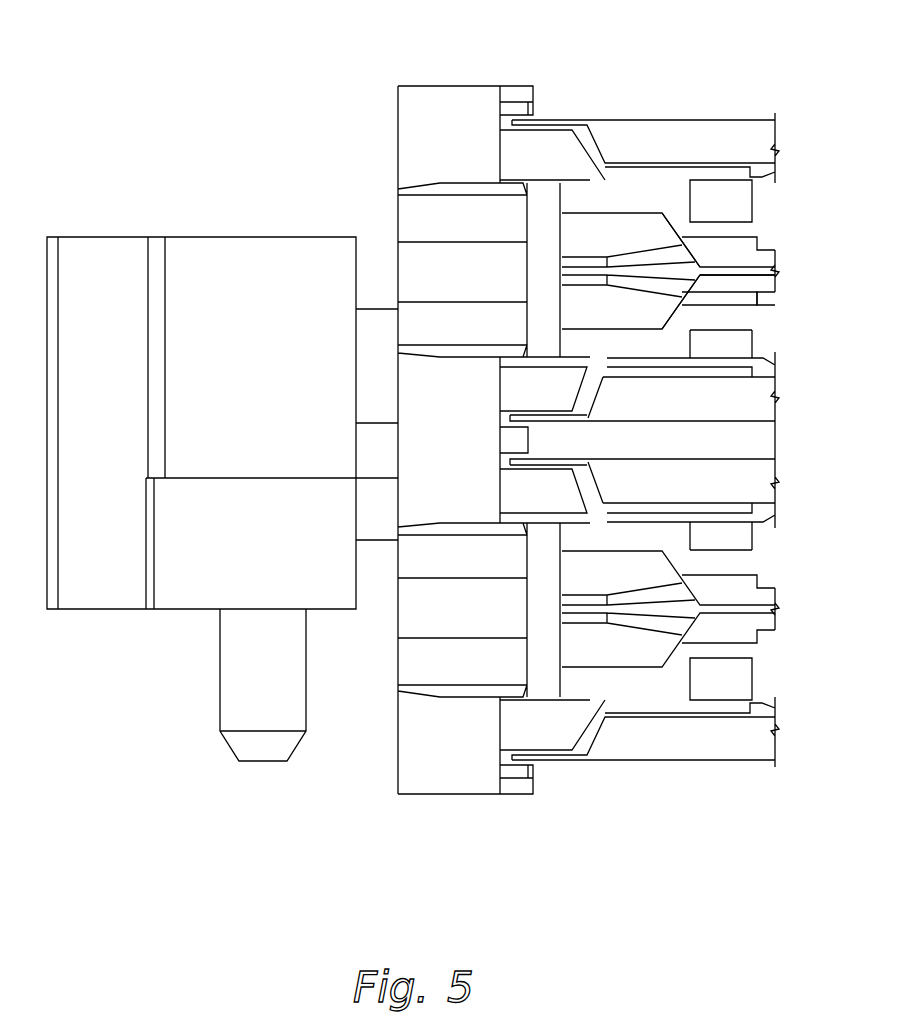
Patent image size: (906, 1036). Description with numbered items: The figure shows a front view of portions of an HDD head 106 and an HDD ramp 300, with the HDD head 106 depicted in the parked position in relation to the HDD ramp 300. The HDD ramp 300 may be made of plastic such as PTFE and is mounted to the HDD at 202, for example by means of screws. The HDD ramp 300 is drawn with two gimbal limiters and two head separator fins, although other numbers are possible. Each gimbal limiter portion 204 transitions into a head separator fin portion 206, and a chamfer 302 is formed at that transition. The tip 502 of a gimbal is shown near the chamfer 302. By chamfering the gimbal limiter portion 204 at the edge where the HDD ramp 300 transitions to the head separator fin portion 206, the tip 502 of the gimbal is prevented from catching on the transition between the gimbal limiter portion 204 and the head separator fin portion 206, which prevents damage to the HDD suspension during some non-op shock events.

The HDD ramp 300 is at (204, 34).
The HDD head 106 is at (690, 100).
The tip of gimbal 502 is at (604, 180).
The gimbal limiter portion 204 is at (577, 212).
The chamfer 302 is at (673, 206).
The head separator fin portion 206 is at (738, 298).
The mounting location 202 is at (230, 750).